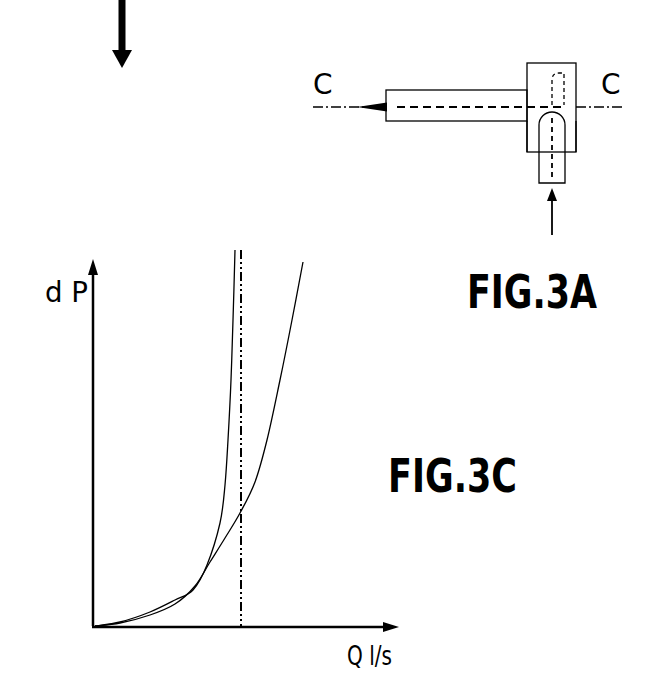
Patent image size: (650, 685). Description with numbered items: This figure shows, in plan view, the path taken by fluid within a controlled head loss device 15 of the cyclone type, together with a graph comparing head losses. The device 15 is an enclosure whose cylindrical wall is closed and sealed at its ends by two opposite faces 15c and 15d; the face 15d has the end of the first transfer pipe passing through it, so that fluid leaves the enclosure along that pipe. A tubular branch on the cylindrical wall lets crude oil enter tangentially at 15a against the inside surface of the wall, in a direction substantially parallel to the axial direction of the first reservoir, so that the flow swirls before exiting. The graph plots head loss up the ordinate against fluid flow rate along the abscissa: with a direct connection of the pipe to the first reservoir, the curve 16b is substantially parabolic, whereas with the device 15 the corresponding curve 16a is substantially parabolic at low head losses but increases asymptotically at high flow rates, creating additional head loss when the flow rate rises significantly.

In FIG. 3A, the cyclone type device 15 is at (545, 63).
In FIG. 3A, the tangential entry 15a is at (563, 172).
In FIG. 3A, the face 15c is at (577, 133).
In FIG. 3A, the face 15d is at (527, 135).
In FIG. 3C, the curve 16a is at (233, 363).
In FIG. 3C, the curve 16b is at (276, 410).